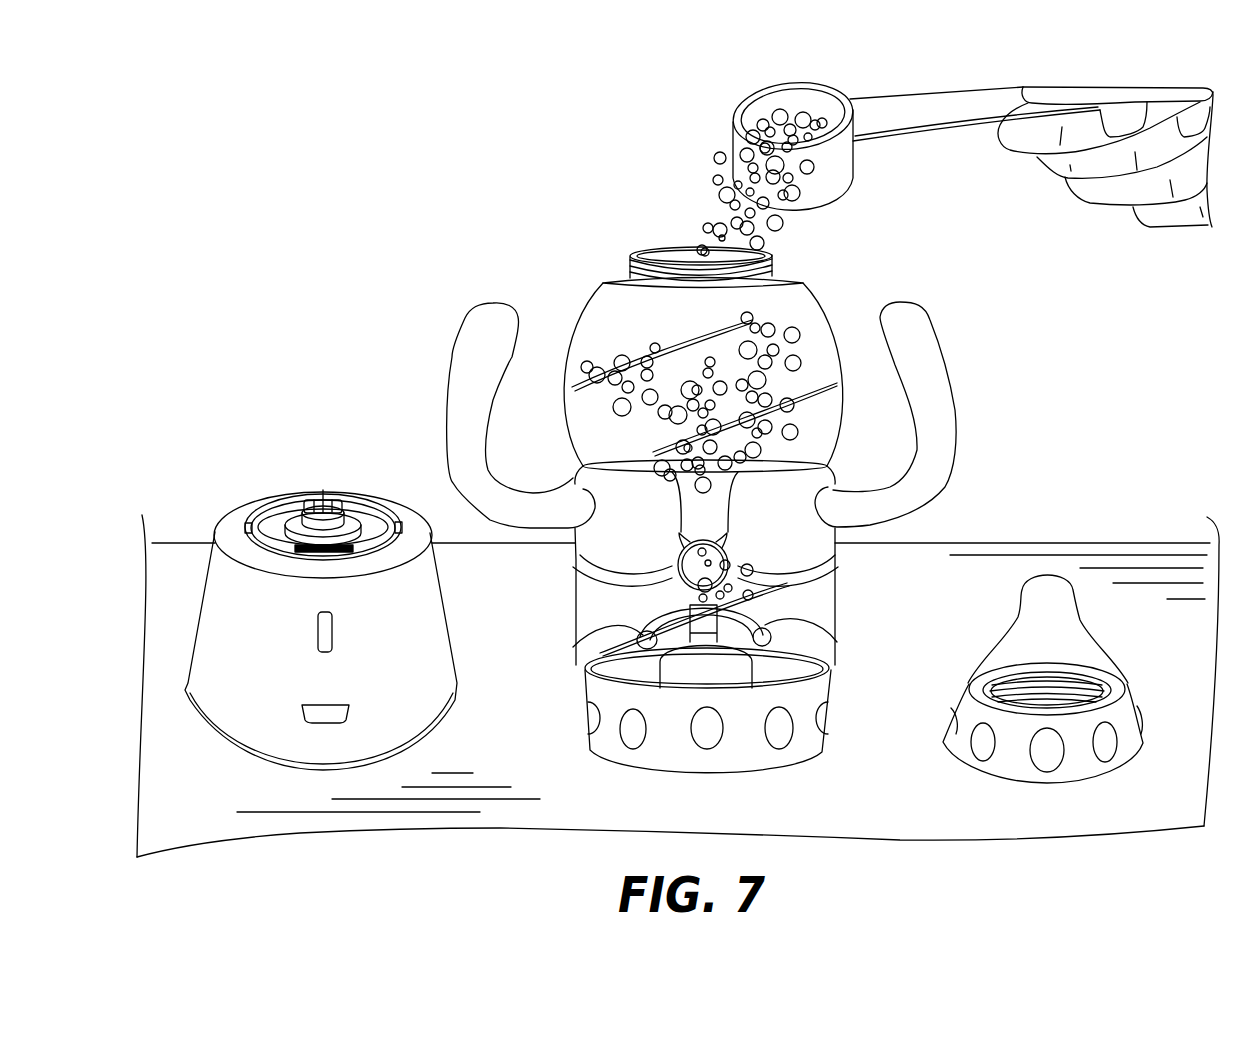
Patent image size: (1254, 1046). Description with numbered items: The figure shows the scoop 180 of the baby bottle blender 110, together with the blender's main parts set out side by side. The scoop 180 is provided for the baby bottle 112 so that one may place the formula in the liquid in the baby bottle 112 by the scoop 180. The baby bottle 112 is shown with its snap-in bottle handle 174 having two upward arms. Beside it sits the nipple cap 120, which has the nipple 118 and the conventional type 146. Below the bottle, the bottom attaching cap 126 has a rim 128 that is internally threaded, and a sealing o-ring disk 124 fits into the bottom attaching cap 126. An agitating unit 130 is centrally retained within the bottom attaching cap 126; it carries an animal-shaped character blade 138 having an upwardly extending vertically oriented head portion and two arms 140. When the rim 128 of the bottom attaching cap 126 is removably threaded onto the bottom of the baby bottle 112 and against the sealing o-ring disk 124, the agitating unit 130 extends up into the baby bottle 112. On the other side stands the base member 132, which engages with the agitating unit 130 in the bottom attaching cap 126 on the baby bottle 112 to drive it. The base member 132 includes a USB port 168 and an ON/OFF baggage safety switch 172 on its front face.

The baby bottle blender 110 is at (996, 305).
The baby bottle 112 is at (818, 582).
The nipple 118 is at (1061, 623).
The nipple cap 120 is at (1112, 728).
The sealing o-ring disk 124 is at (740, 670).
The bottom attaching cap 126 is at (587, 726).
The rim 128 is at (820, 687).
The agitating unit 130 is at (770, 628).
The base member 132 is at (212, 578).
The animal-shaped character blade 138 is at (678, 583).
The arms 140 is at (618, 638).
The conventional type 146 is at (1038, 610).
The USB port 168 is at (303, 712).
The ON/OFF baggage safety switch 172 is at (318, 631).
The snap-in bottle handle 174 is at (938, 418).
The scoop 180 is at (922, 118).